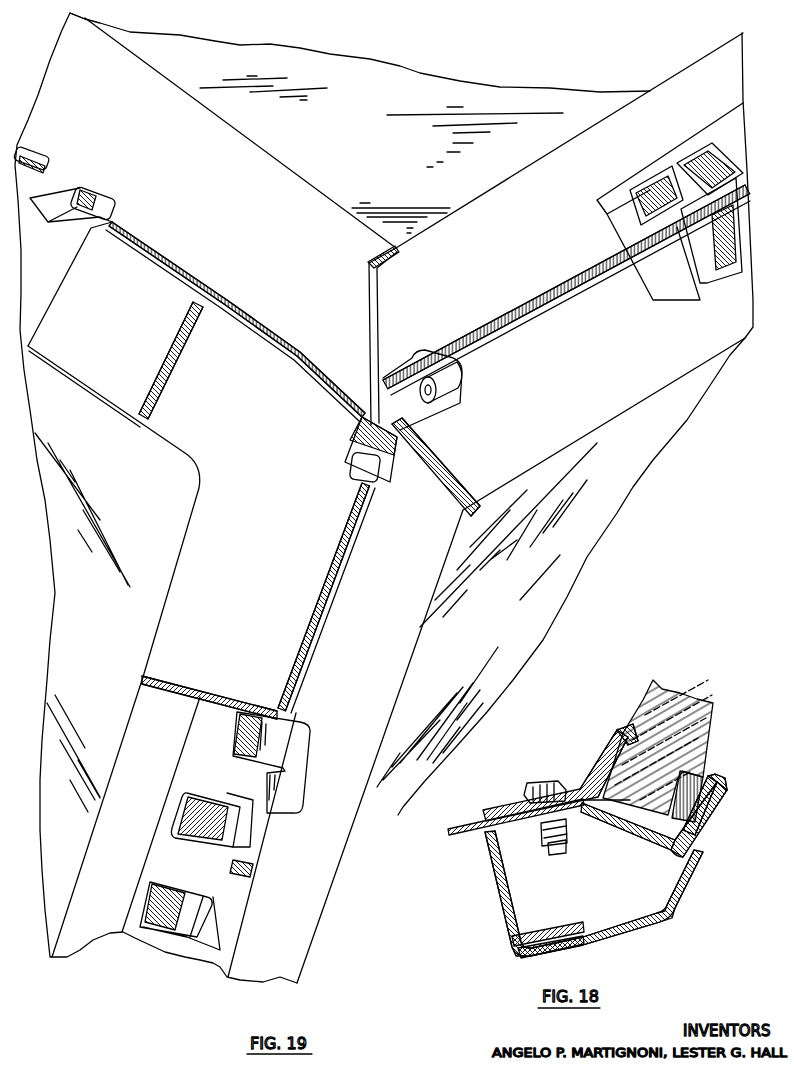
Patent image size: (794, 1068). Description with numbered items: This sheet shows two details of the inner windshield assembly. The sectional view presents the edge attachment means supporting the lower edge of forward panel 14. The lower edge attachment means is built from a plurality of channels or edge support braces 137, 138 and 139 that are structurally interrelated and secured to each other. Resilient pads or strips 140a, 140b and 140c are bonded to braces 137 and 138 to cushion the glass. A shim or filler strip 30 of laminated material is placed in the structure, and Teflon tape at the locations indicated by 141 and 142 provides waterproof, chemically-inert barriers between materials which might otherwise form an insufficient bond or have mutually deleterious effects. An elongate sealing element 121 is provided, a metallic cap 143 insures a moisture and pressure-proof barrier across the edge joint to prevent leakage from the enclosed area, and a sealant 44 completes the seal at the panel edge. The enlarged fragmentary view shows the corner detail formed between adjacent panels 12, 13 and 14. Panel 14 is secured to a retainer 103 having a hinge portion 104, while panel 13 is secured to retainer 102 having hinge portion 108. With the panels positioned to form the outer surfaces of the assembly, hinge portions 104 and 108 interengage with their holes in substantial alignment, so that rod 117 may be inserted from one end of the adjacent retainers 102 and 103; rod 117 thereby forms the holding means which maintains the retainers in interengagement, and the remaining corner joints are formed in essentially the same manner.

In FIG. 19, the panel 12 is at (408, 87).
In FIG. 19, the panel 13 is at (521, 660).
In FIG. 19, the forward panel 14 is at (189, 411).
In FIG. 18, the forward panel 14 is at (687, 713).
In FIG. 19, the rod 117 is at (358, 445).
In FIG. 19, the retainer 102 is at (382, 663).
In FIG. 19, the retainer 103 is at (120, 833).
In FIG. 19, the hinge portion 104 is at (257, 774).
In FIG. 19, the hinge portion 108 is at (243, 830).
In FIG. 18, the edge support brace 139 is at (453, 840).
In FIG. 18, the edge support brace 137 is at (597, 777).
In FIG. 18, the Teflon tape 141 is at (607, 748).
In FIG. 18, the resilient pad 140a is at (623, 732).
In FIG. 18, the sealant 44 is at (620, 733).
In FIG. 18, the sealing element 121 is at (577, 793).
In FIG. 18, the shim 30 is at (693, 770).
In FIG. 18, the edge support brace 138 is at (600, 830).
In FIG. 18, the Teflon tape 142 is at (687, 847).
In FIG. 18, the metallic cap 143 is at (720, 807).
In FIG. 18, the resilient pad 140c is at (713, 780).
In FIG. 18, the resilient pad 140b is at (643, 847).